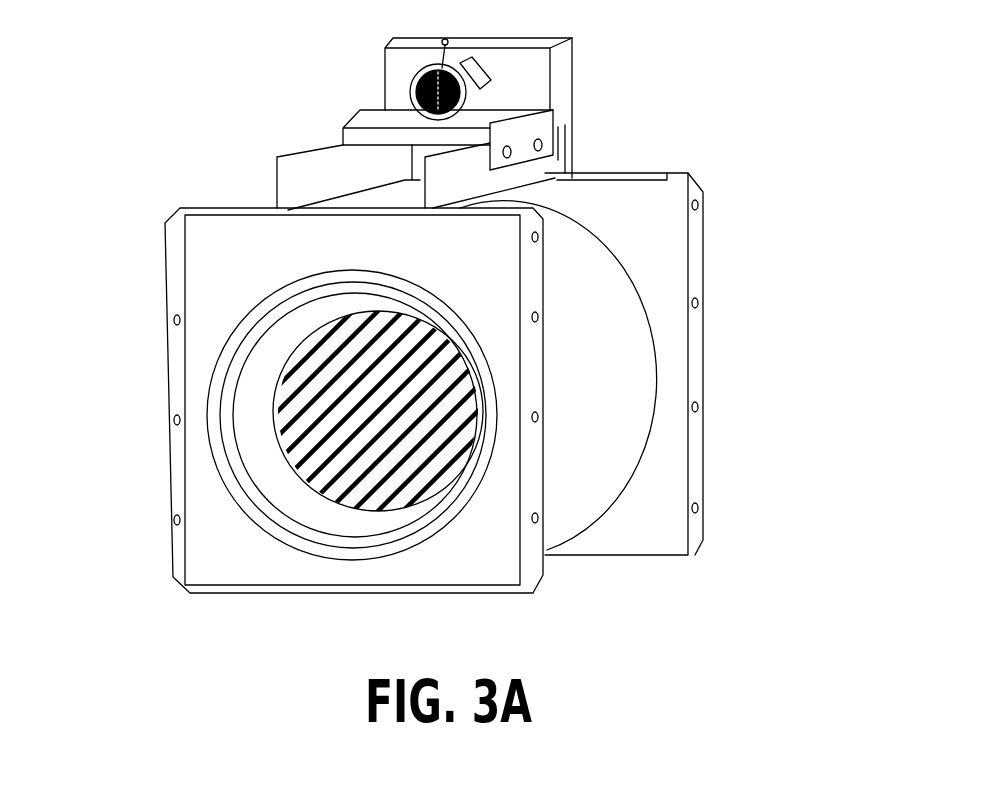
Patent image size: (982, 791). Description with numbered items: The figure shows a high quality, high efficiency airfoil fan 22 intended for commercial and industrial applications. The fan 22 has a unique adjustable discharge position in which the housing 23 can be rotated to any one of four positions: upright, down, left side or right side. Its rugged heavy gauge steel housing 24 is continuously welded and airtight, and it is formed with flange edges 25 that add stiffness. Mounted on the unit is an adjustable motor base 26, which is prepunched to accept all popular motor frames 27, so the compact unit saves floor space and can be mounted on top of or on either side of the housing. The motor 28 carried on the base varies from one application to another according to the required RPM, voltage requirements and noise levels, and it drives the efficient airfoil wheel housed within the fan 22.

The airfoil fan 22 is at (728, 228).
The housing 23 is at (272, 485).
The heavy gauge steel housing 24 is at (635, 368).
The flange edges 25 is at (167, 368).
The adjustable motor base 26 is at (543, 167).
The motor frames 27 is at (353, 130).
The motor 28 is at (430, 63).